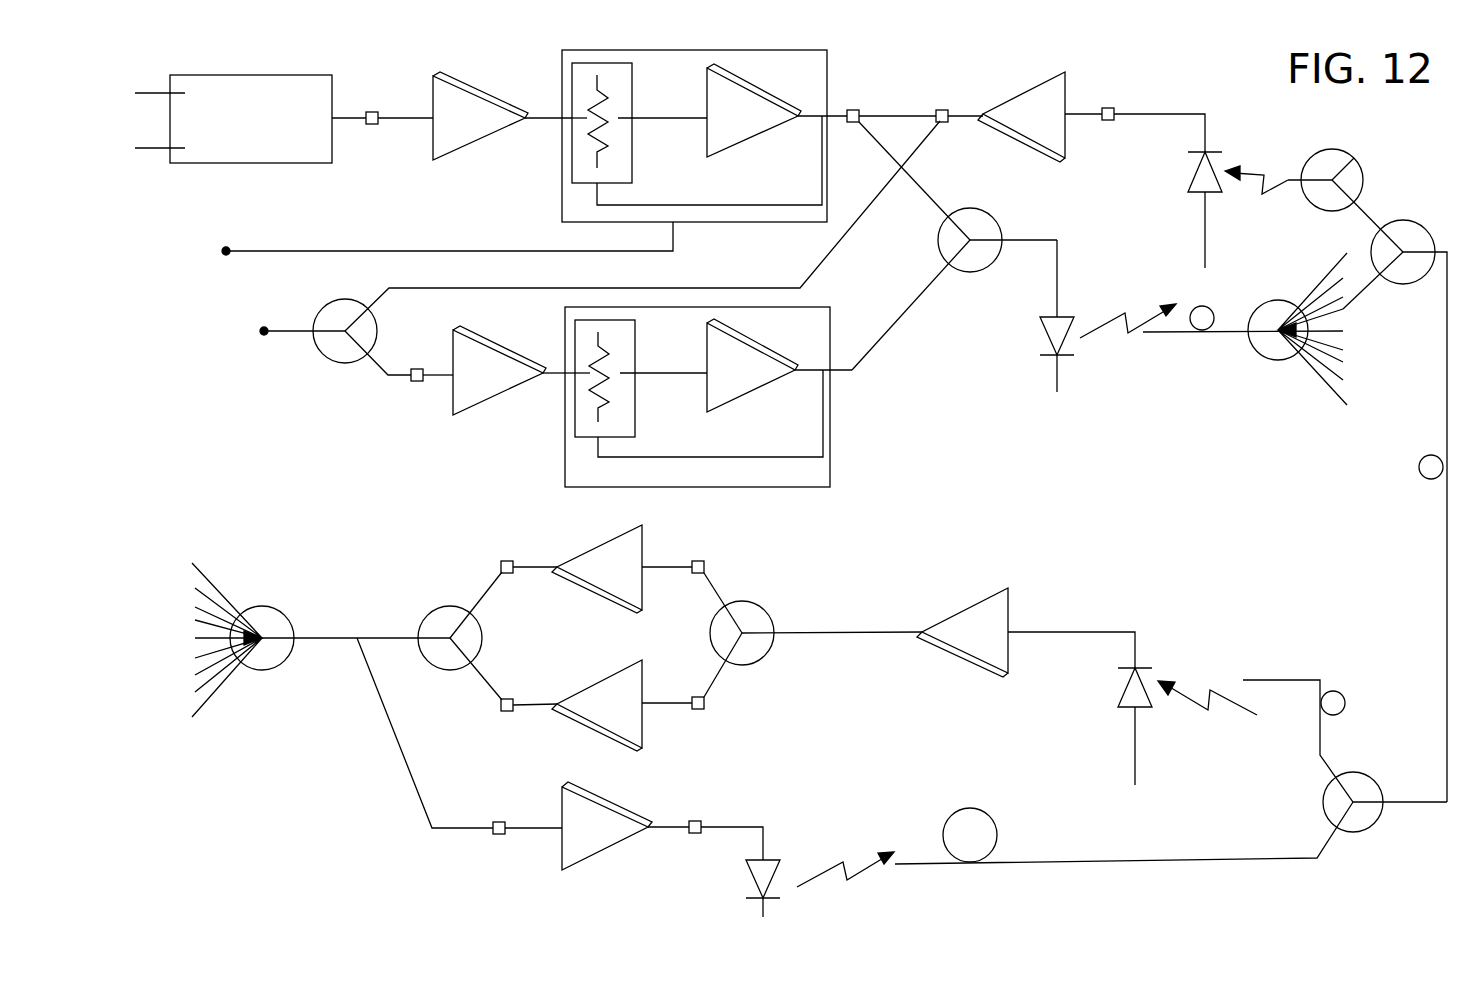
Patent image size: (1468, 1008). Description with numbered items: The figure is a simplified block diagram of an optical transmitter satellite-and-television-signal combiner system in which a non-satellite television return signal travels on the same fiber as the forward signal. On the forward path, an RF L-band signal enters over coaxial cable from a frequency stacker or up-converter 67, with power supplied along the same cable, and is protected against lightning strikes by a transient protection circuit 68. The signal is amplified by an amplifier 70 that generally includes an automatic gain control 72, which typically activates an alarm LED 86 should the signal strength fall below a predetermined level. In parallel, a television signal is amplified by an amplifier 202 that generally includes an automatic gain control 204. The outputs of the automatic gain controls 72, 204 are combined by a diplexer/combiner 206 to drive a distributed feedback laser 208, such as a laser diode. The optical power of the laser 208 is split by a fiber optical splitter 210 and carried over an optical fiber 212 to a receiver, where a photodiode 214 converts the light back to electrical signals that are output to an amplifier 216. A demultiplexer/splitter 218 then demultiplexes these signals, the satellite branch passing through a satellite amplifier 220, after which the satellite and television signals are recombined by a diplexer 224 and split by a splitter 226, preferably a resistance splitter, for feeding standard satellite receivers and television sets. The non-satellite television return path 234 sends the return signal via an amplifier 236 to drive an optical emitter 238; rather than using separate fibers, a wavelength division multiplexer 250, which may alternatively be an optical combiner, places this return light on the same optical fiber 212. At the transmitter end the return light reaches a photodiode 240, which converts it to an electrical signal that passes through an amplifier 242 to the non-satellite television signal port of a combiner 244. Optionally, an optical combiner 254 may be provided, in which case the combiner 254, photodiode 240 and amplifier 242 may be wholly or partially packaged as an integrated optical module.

The frequency stacker or up-converter 67 is at (233, 160).
The transient protection circuit 68 is at (368, 126).
The amplifier 70 is at (481, 128).
The automatic gain control (AGC) 72 is at (818, 64).
The alarm LED 86 is at (178, 288).
The amplifier 202 is at (487, 388).
The automatic gain control (AGC) 204 is at (830, 333).
The diplexer/combiner 206 is at (972, 266).
The distributed feedback (DFB) laser 208 is at (1050, 322).
The fiber optical splitter 210 is at (1267, 306).
The optical fiber 212 is at (1444, 548).
The photodiode 214 is at (1150, 708).
The amplifier 216 is at (965, 614).
The demultiplexer/splitter 218 is at (752, 655).
The satellite amplifier 220 is at (604, 552).
The diplexer 224 is at (437, 618).
The splitter 226 is at (270, 618).
The non-satellite television return path 234 is at (400, 770).
The amplifier 236 is at (612, 834).
The optical emitter 238 is at (751, 866).
The photodiode 240 is at (1192, 177).
The amplifier 242 is at (1020, 96).
The combiner 244 is at (330, 352).
The wavelength division multiplexer 250 is at (1357, 778).
The optical combiner 254 is at (1326, 152).